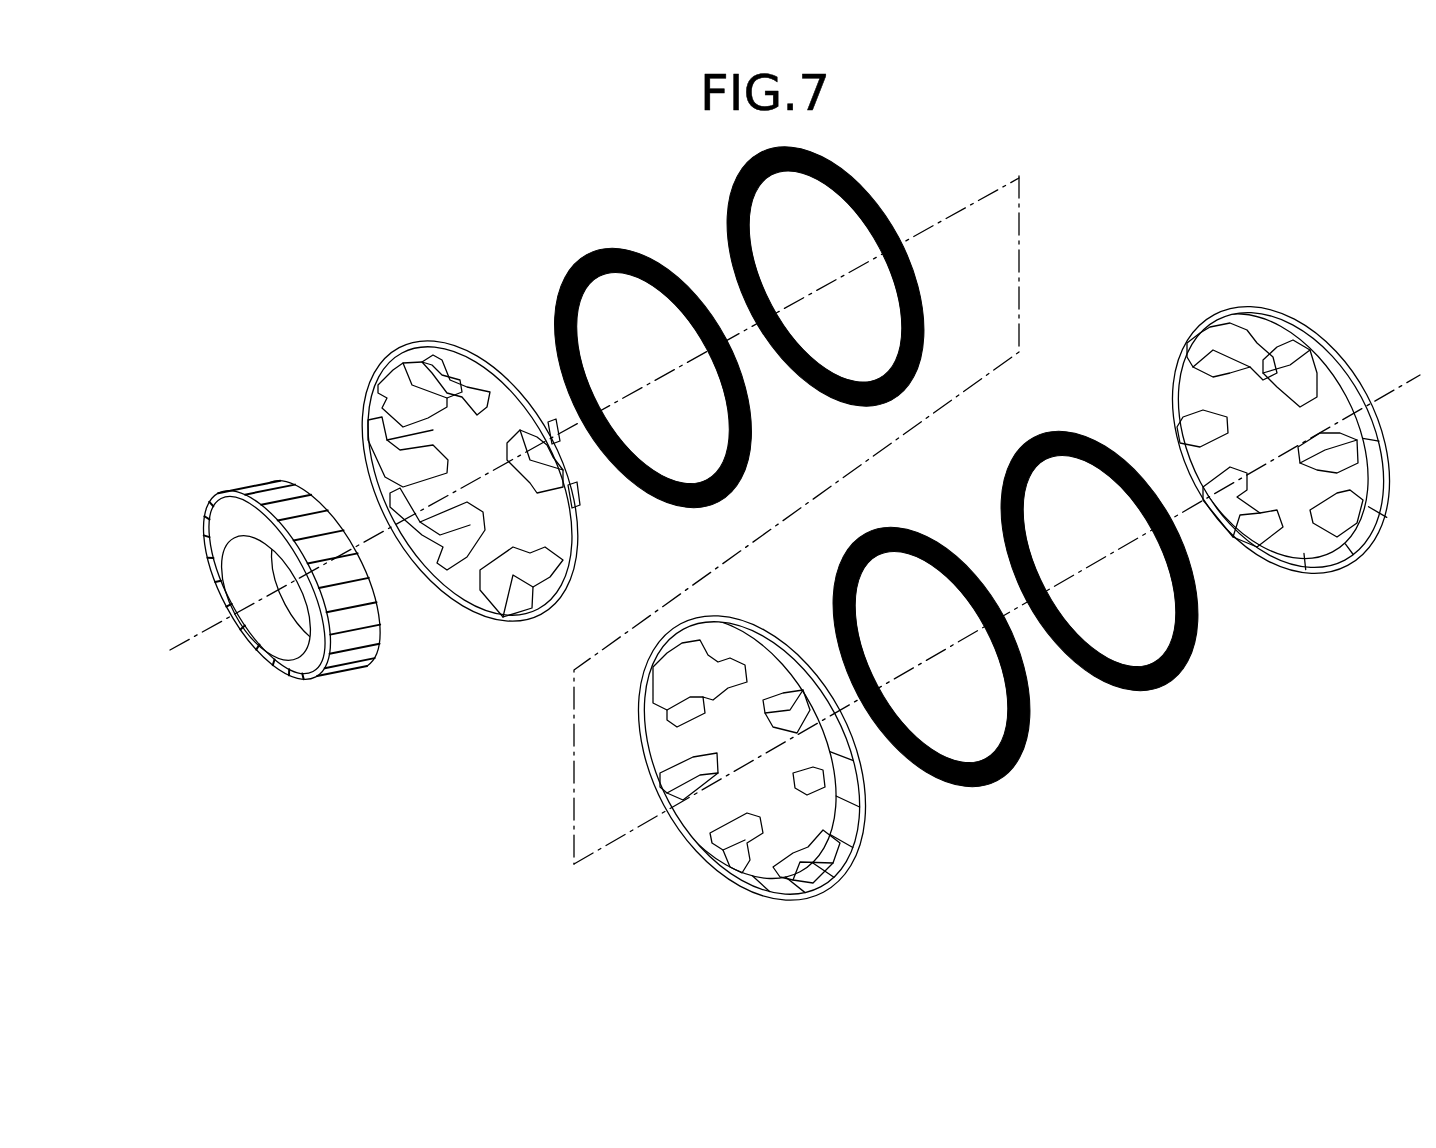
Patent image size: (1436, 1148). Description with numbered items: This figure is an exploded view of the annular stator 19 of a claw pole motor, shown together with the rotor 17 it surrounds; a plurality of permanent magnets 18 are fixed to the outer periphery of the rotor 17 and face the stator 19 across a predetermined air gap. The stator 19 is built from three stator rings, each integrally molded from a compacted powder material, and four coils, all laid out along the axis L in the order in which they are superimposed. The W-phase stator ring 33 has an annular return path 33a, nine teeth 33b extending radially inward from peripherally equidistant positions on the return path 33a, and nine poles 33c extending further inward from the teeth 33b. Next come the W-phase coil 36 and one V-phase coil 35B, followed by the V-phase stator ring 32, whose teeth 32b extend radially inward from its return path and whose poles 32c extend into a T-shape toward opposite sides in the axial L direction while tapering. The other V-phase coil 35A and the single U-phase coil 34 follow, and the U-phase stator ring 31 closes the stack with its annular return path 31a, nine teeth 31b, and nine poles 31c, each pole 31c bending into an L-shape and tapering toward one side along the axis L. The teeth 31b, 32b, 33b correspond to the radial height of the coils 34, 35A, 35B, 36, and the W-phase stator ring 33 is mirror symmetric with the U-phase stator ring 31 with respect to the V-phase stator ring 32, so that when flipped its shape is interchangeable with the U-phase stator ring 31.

The rotor 17 is at (288, 555).
The permanent magnets 18 is at (241, 477).
The stator 19 is at (1070, 297).
The U-phase stator ring 31 is at (1281, 415).
The return path 31a is at (1330, 367).
The teeth 31b is at (1225, 328).
The poles 31c is at (1248, 365).
The V-phase stator ring 32 is at (776, 755).
The teeth 32b is at (653, 710).
The poles 32c is at (692, 715).
The W-phase stator ring 33 is at (460, 462).
The return path 33a is at (465, 348).
The teeth 33b is at (387, 477).
The poles 33c is at (457, 463).
The U-phase coil 34 is at (1170, 677).
The V-phase coil 35A is at (1002, 767).
The V-phase coil 35B is at (842, 170).
The W-phase coil 36 is at (615, 242).
The axis L is at (642, 380).